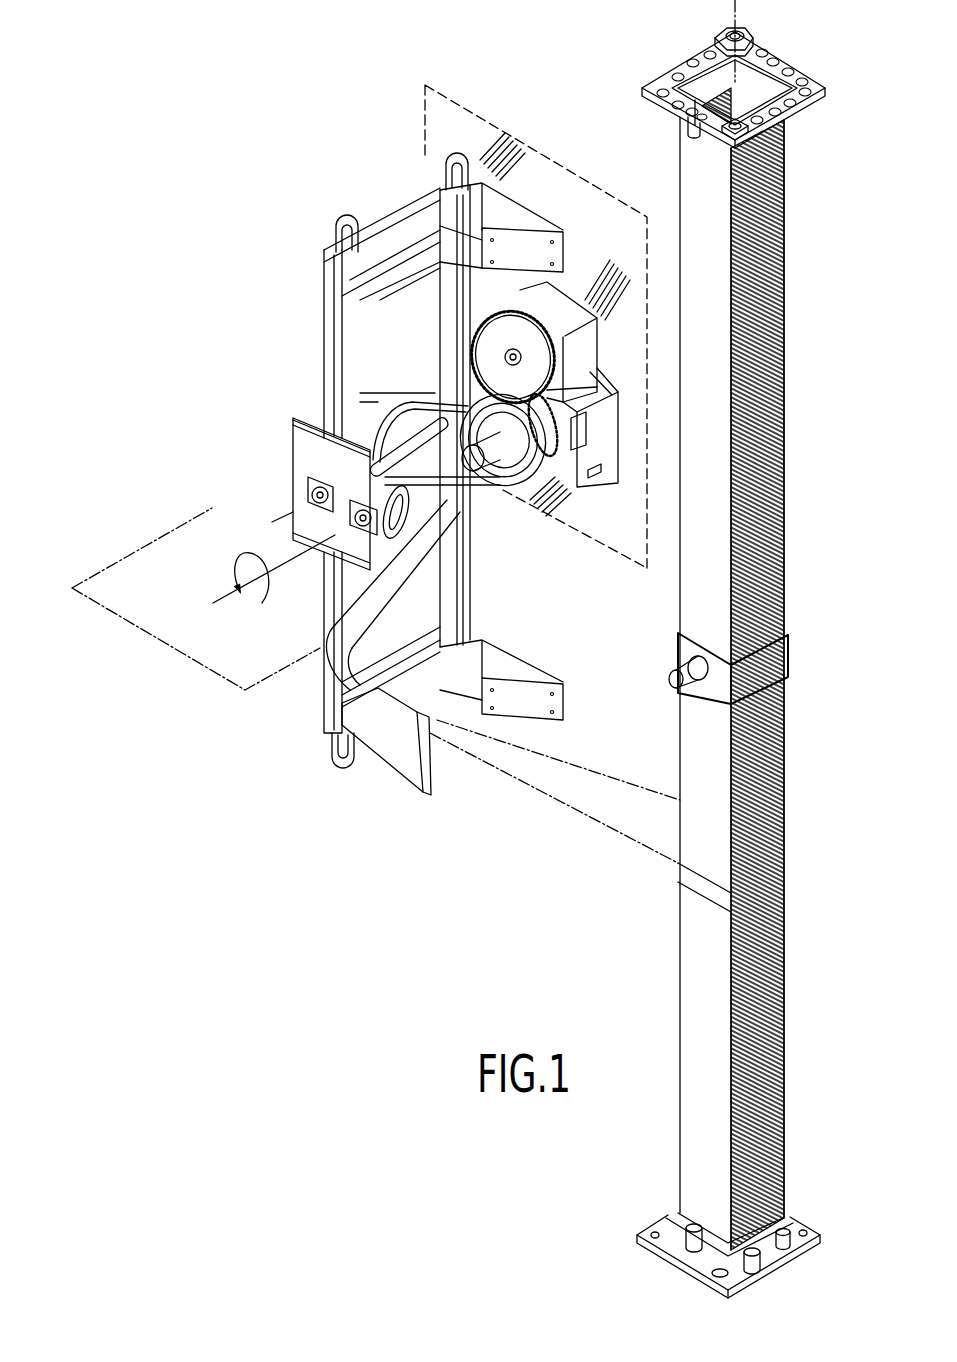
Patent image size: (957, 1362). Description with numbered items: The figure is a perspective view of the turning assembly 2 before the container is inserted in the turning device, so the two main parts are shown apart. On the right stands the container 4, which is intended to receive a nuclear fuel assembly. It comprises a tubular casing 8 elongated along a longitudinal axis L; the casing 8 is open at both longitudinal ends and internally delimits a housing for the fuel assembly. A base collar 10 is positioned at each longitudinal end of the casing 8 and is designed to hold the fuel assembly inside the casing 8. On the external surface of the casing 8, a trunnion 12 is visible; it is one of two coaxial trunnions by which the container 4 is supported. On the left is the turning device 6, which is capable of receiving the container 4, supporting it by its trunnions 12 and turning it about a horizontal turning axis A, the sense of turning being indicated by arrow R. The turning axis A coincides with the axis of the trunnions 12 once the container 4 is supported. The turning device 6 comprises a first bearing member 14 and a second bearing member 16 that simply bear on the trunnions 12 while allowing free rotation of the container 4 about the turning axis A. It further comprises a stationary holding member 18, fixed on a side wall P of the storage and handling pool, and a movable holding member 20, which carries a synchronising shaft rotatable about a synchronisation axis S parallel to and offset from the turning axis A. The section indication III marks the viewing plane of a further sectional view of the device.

The turning assembly 2 is at (407, 428).
The container 4 is at (771, 683).
The turning device 6 is at (520, 130).
The tubular casing 8 is at (790, 410).
The base collar 10 is at (818, 88).
The trunnion 12 is at (683, 668).
The first bearing member 14 is at (487, 509).
The second bearing member 16 is at (380, 560).
The stationary holding member 18 is at (613, 503).
The movable holding member 20 is at (265, 487).
The turning axis A is at (322, 523).
The arrow R is at (240, 577).
The synchronisation axis S is at (275, 528).
The side wall P is at (633, 540).
The longitudinal axis L is at (745, 41).
The section III is at (92, 586).